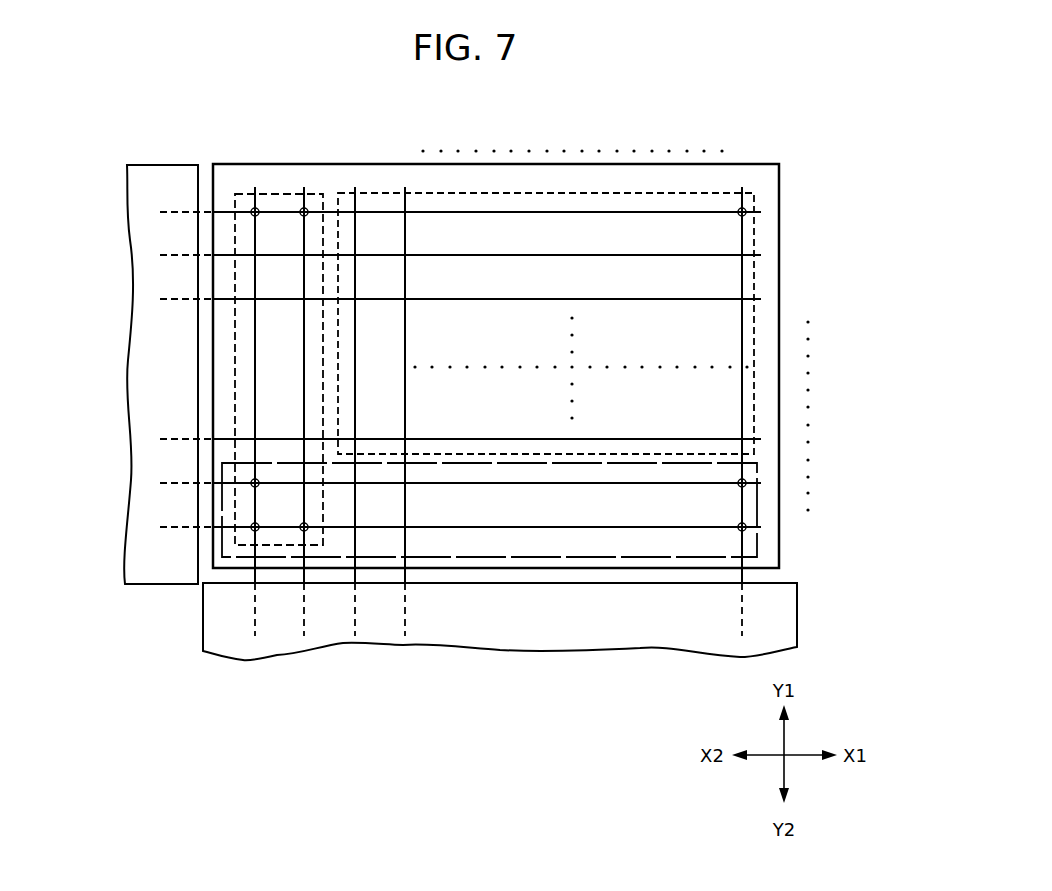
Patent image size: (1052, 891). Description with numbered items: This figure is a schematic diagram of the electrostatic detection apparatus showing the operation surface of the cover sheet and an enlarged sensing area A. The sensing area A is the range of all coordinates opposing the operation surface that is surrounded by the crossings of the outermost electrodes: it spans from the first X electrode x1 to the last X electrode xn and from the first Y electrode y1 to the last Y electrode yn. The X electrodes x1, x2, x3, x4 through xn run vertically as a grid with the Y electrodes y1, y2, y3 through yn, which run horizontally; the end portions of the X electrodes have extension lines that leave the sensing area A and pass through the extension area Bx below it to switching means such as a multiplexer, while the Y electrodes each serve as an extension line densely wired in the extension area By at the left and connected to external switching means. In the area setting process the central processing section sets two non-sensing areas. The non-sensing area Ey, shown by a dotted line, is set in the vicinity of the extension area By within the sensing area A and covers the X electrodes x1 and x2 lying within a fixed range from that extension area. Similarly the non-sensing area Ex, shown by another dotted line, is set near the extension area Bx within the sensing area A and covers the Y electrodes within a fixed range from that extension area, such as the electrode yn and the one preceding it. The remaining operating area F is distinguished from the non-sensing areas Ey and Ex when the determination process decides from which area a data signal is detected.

The sensing area A is at (623, 164).
The operating area F is at (507, 194).
The extension area By is at (157, 164).
The extension area Bx is at (797, 632).
The non-sensing area Ey is at (235, 380).
The non-sensing area Ex is at (507, 558).
The X electrode x1 is at (255, 388).
The X electrode x2 is at (304, 388).
The X electrode x3 is at (355, 388).
The X electrode x4 is at (405, 388).
The X electrode xn is at (740, 388).
The Y electrode y1 is at (489, 212).
The Y electrode y2 is at (489, 255).
The Y electrode y3 is at (489, 299).
The Y electrode yn is at (489, 527).